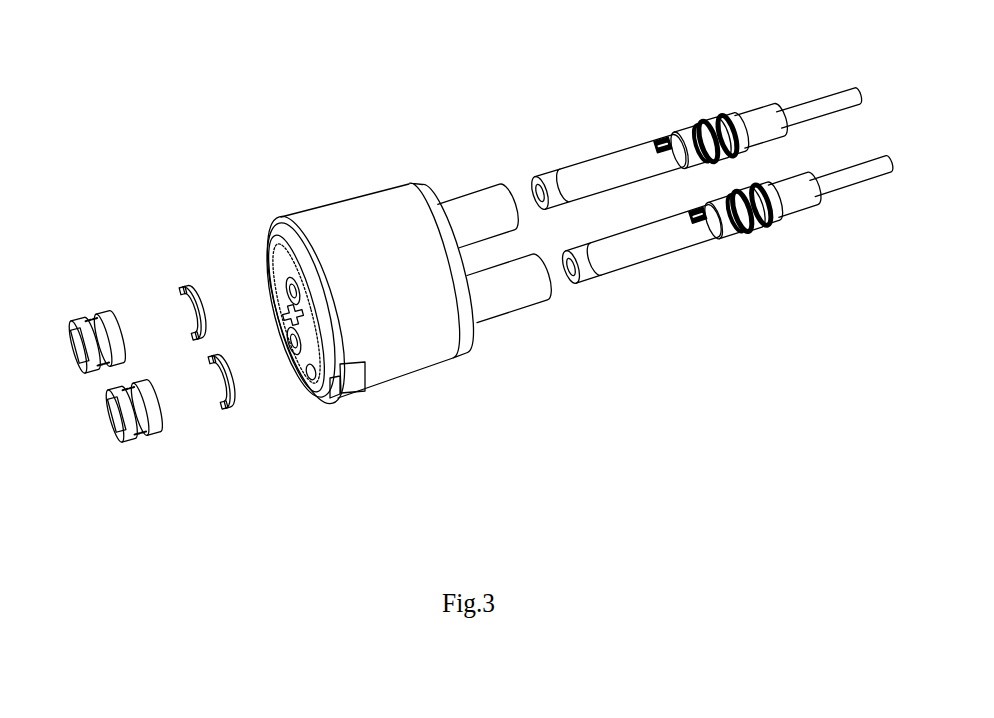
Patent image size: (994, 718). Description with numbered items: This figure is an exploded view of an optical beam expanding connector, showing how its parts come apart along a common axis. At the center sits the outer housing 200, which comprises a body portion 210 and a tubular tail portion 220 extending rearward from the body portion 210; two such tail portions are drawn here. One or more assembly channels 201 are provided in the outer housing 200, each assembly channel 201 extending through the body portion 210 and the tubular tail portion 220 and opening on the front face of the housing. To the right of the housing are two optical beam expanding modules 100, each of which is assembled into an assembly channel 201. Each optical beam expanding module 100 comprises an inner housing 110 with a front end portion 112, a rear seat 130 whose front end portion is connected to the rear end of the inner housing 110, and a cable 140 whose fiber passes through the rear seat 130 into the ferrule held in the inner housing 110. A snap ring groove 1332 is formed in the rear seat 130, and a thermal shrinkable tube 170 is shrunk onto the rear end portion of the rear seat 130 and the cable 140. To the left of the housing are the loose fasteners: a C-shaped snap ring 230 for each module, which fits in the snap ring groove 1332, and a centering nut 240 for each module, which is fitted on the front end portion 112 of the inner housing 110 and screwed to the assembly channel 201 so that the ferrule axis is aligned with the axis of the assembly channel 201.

The optical beam expanding module 100 is at (595, 119).
The inner housing 110 is at (603, 167).
The front end portion 112 is at (547, 180).
The rear seat 130 is at (713, 120).
The snap ring groove 1332 is at (697, 127).
The cable 140 is at (807, 107).
The thermal shrinkable tube 170 is at (759, 110).
The outer housing 200 is at (413, 423).
The assembly channel 201 is at (272, 270).
The body portion 210 is at (353, 212).
The tubular tail portion 220 is at (477, 203).
The C-shaped snap ring 230 is at (192, 285).
The centering nut 240 is at (88, 323).